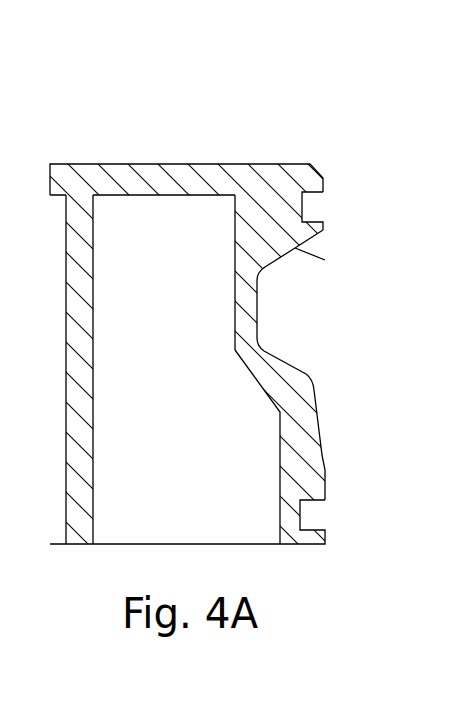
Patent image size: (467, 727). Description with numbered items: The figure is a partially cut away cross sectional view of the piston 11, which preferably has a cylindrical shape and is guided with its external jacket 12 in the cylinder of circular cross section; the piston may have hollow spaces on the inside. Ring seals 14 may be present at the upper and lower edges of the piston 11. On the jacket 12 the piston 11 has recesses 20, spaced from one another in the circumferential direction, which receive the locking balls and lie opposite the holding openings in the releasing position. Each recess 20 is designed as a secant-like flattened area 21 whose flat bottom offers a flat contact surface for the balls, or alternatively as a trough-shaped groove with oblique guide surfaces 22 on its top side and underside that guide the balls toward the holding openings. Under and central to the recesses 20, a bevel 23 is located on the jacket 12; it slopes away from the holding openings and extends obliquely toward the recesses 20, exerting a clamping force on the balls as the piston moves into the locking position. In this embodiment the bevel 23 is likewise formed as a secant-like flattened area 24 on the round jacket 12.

The piston 11 is at (147, 177).
The ring seals 14 is at (318, 200).
The oblique guide surfaces 22 is at (325, 260).
The recesses 20 is at (307, 288).
The secant-like flattened areas 21 is at (257, 318).
The bevel 23 is at (318, 420).
The secant-like flattened area 24 is at (318, 420).
The external jacket 12 is at (327, 485).